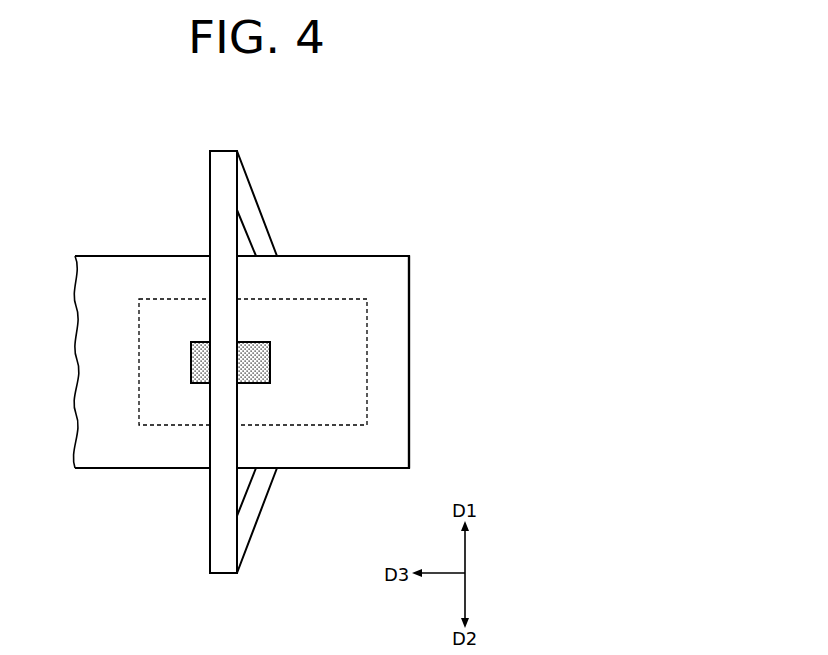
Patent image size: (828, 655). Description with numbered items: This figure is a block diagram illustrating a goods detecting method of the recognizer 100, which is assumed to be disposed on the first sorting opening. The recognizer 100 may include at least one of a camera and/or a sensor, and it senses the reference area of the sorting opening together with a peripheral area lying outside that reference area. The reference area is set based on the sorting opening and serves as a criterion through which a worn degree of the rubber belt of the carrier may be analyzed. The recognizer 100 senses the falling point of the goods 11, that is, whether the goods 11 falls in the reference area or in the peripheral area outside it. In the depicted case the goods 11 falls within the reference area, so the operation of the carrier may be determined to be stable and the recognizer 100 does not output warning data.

The recognizer 100 is at (224, 158).
The goods 11 is at (270, 362).